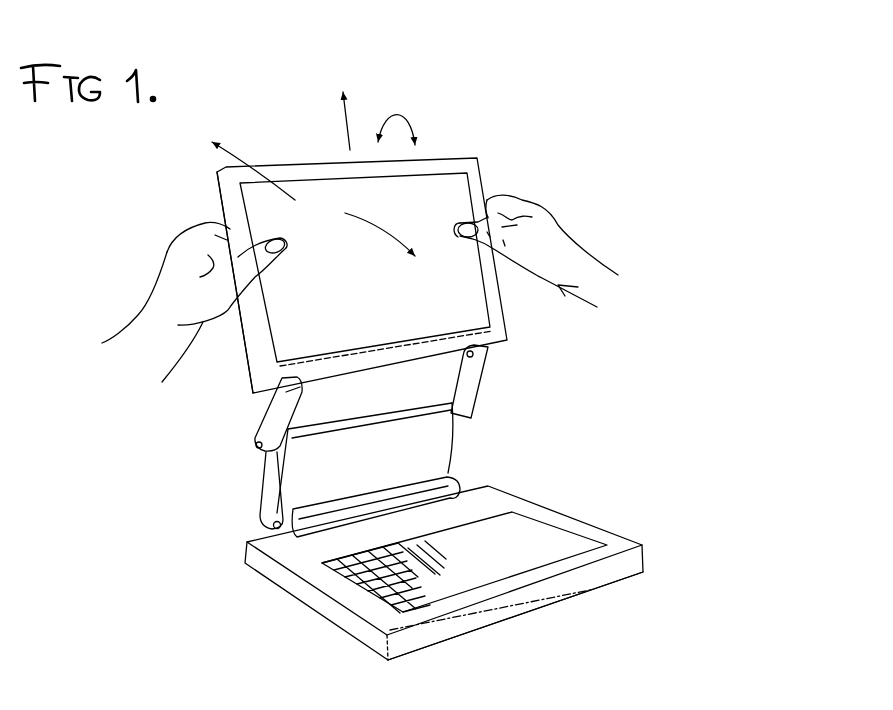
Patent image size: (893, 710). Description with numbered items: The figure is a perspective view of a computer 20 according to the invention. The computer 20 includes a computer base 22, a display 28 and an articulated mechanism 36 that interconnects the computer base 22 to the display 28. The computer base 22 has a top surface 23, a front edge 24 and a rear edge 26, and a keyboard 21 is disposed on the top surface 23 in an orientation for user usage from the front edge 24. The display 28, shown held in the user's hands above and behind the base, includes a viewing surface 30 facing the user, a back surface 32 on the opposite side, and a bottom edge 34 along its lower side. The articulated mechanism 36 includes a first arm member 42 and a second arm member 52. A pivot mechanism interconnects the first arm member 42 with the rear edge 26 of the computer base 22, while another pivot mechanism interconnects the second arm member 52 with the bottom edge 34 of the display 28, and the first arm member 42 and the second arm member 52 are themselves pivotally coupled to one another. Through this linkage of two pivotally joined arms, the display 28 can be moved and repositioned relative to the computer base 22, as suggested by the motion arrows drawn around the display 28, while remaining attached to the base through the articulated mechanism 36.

The computer 20 is at (476, 77).
The keyboard 21 is at (405, 577).
The computer base 22 is at (594, 518).
The top surface 23 is at (616, 546).
The front edge 24 is at (600, 572).
The rear edge 26 is at (247, 540).
The display 28 is at (484, 172).
The viewing surface 30 is at (442, 313).
The back surface 32 is at (227, 192).
The bottom edge 34 is at (290, 416).
The articulated mechanism 36 is at (455, 455).
The first arm member 42 is at (247, 489).
The second arm member 52 is at (291, 420).